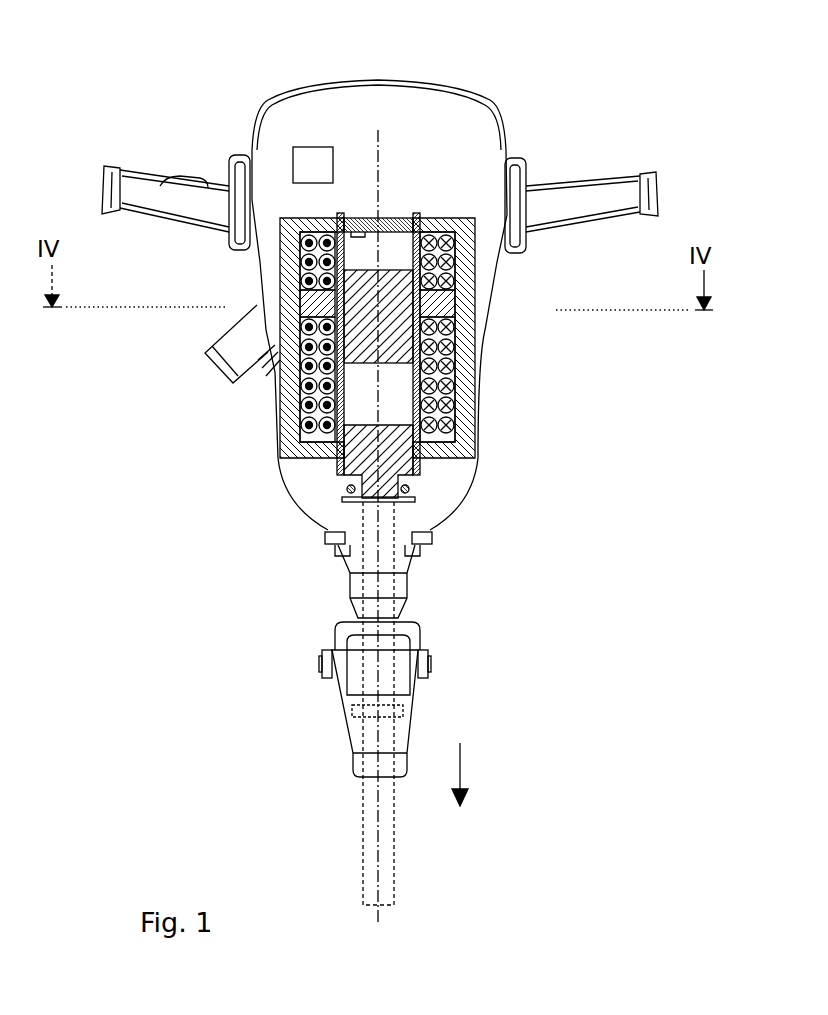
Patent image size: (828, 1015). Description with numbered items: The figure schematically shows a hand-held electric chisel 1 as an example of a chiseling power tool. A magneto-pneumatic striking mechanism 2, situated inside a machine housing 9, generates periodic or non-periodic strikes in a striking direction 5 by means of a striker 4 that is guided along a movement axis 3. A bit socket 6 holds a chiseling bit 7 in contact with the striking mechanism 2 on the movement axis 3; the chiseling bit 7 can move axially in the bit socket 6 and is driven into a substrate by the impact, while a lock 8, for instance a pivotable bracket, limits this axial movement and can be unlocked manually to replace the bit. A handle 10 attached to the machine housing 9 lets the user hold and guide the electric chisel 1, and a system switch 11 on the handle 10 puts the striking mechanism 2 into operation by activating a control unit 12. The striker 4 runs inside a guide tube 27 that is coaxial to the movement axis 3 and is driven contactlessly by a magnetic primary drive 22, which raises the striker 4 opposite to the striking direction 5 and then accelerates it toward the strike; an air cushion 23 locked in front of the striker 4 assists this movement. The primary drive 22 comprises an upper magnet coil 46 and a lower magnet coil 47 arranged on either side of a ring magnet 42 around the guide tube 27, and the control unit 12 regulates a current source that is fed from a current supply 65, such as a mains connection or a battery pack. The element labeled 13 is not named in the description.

The electric chisel 1 is at (122, 61).
The striking mechanism 2 is at (579, 313).
The movement axis 3 is at (383, 808).
The striker 4 is at (398, 312).
The striking direction 5 is at (460, 770).
The bit socket 6 is at (375, 668).
The chiseling bit 7 is at (363, 820).
The lock 8 is at (355, 757).
The machine housing 9 is at (490, 150).
The handle 10 is at (594, 198).
The system switch 11 is at (177, 183).
The control unit 12 is at (296, 150).
The bearing plate 13 is at (440, 438).
The primary drive 22 is at (124, 272).
The air cushion 23 is at (395, 255).
The guide tube 27 is at (452, 372).
The ring magnet 42 is at (300, 313).
The upper magnet coil 46 is at (300, 282).
The lower magnet coil 47 is at (300, 375).
The current supply 65 is at (233, 385).